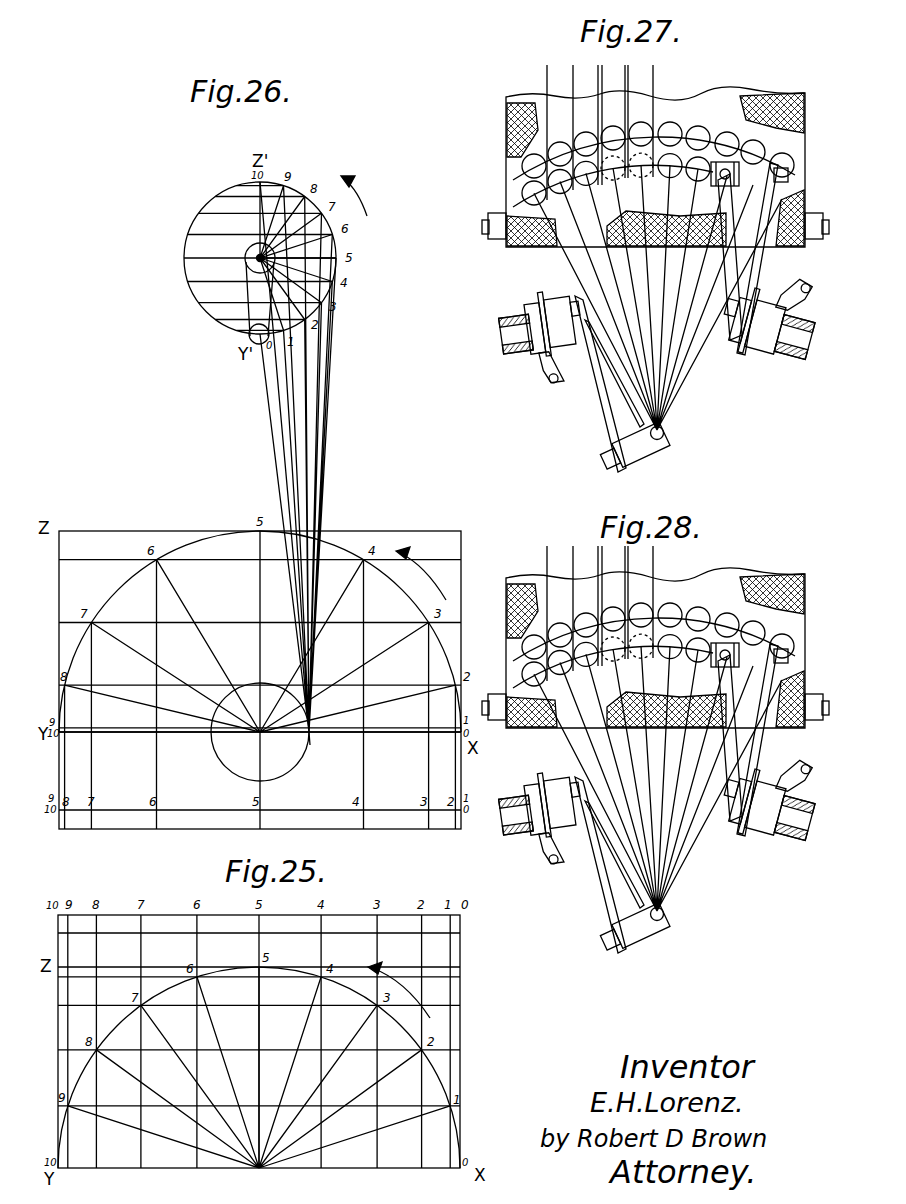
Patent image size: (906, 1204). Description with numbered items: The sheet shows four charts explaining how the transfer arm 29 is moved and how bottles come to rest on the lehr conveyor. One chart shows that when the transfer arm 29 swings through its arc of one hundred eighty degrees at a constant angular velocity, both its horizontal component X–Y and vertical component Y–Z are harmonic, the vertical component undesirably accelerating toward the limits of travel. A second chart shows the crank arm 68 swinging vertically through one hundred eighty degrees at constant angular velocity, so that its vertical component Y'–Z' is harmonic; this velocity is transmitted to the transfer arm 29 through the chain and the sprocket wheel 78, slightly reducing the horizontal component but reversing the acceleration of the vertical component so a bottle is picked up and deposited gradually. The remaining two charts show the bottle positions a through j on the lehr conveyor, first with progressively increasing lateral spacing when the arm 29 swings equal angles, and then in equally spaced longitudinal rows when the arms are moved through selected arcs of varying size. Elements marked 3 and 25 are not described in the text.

In FIG. 27, the needle block 3 is at (506, 120).
In FIG. 28, the needle block 3 is at (645, 637).
In FIG. 27, the shaft 25 is at (507, 318).
In FIG. 28, the shaft 25 is at (652, 809).
In FIG. 26, the transfer arm 29 is at (400, 734).
In FIG. 27, the transfer arm 29 is at (592, 372).
In FIG. 28, the transfer arm 29 is at (693, 799).
In FIG. 27, the sprocket wheel 78 is at (545, 292).
In FIG. 28, the sprocket wheel 78 is at (633, 811).
In FIG. 26, the crank arm 68 is at (248, 312).